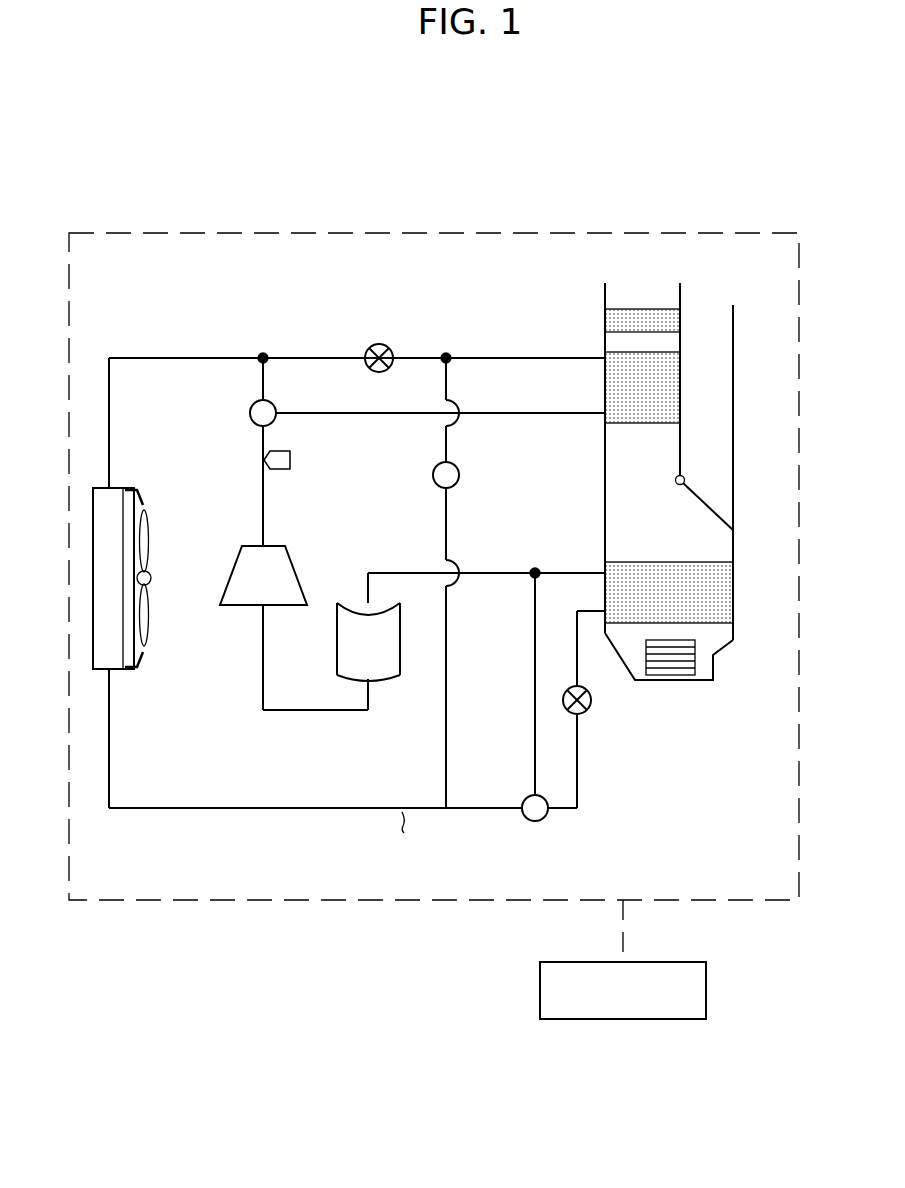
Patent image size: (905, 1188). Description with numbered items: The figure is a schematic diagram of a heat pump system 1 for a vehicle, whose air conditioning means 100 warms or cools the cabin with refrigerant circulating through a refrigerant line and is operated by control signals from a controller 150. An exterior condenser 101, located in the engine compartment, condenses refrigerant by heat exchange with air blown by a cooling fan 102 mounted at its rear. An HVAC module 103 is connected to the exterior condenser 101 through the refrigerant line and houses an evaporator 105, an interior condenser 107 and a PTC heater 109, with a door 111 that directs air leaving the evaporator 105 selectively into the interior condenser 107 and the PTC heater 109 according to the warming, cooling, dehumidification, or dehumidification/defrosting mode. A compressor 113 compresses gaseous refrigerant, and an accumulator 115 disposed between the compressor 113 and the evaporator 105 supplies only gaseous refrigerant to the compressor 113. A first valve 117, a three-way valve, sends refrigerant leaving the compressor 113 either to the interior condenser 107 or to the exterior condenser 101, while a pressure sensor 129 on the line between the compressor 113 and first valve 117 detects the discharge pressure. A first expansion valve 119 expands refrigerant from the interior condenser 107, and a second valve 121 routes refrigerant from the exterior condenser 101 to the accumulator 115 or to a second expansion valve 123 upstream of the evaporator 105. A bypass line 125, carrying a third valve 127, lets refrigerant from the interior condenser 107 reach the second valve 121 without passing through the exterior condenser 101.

The heat pump system 1 is at (414, 177).
The air conditioning means 100 is at (599, 232).
The exterior condenser 101 is at (118, 487).
The cooling fan 102 is at (150, 537).
The HVAC module 103 is at (728, 424).
The evaporator 105 is at (735, 597).
The interior condenser 107 is at (681, 378).
The PTC heater 109 is at (681, 320).
The door 111 is at (710, 504).
The compressor 113 is at (237, 607).
The accumulator 115 is at (397, 676).
The first valve 117 is at (249, 413).
The first expansion valve 119 is at (380, 344).
The second valve 121 is at (536, 822).
The second expansion valve 123 is at (592, 700).
The bypass line 125 is at (445, 524).
The third valve 127 is at (460, 475).
The pressure sensor 129 is at (292, 460).
The controller 150 is at (708, 988).